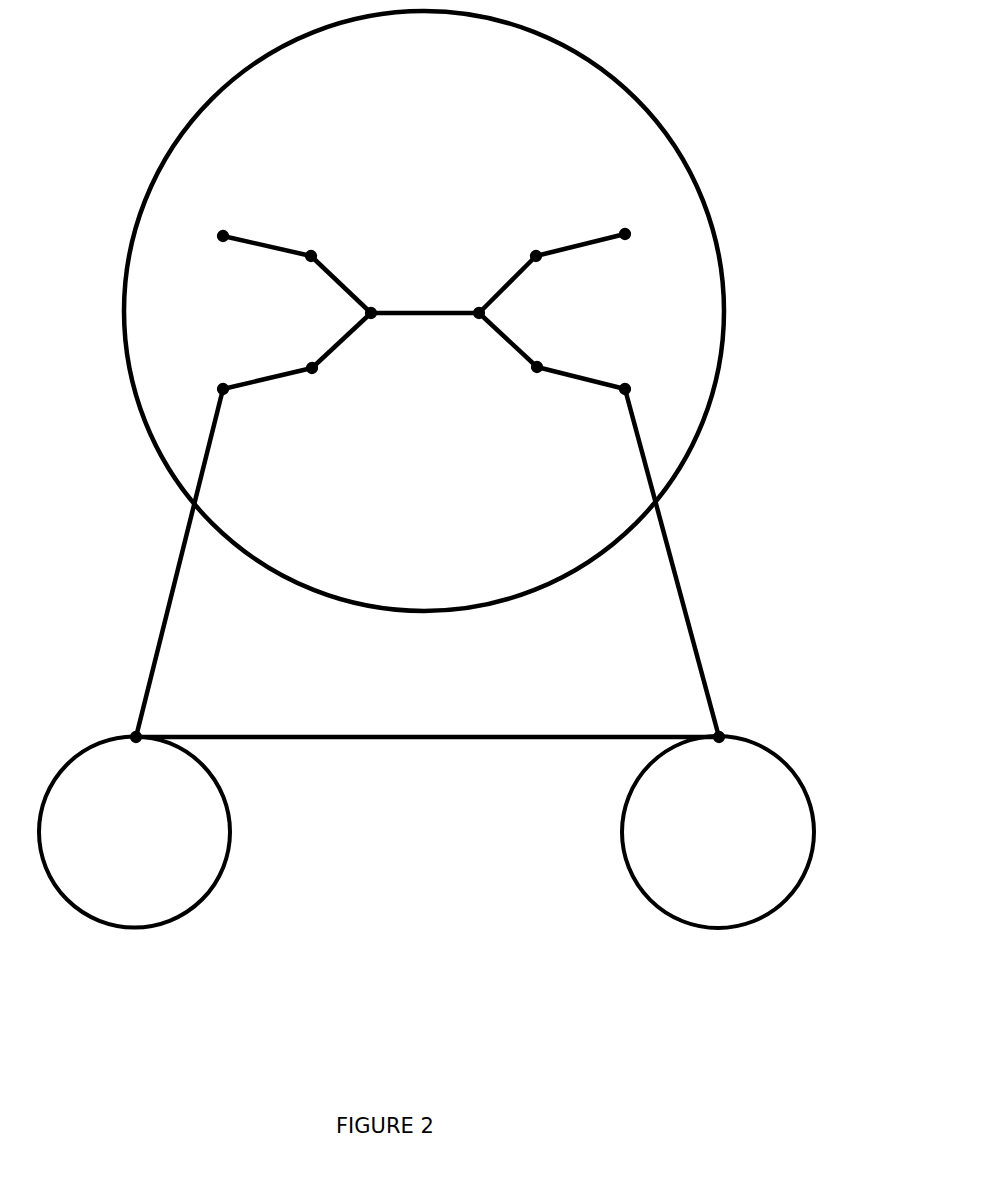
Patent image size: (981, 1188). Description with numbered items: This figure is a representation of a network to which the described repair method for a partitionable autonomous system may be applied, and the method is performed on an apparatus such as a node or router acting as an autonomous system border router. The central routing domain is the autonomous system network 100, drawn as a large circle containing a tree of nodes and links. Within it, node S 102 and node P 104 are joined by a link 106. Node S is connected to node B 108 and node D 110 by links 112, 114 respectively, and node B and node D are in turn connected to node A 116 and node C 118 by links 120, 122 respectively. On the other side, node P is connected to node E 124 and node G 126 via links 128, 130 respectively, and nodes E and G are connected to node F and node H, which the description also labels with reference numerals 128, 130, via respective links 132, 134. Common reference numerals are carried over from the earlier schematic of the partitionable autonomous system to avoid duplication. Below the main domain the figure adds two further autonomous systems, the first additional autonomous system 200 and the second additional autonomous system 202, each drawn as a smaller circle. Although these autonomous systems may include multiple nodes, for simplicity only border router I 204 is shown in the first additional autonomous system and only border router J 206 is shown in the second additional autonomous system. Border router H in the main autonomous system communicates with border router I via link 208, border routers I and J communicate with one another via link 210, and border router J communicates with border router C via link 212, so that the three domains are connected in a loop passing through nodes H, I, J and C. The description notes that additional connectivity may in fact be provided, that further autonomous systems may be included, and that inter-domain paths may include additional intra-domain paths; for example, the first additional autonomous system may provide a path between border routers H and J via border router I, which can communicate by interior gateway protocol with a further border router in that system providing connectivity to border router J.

The autonomous system network 100 is at (638, 98).
The node S 102 is at (373, 317).
The node P 104 is at (480, 317).
The link 106 is at (426, 309).
The node B 108 is at (306, 263).
The node D 110 is at (305, 360).
The link 112 is at (336, 275).
The link 114 is at (337, 351).
The node A 116 is at (217, 247).
The node C 118 is at (218, 383).
The link 120 is at (267, 247).
The link 122 is at (263, 385).
The node E 124 is at (542, 260).
The node G 126 is at (542, 363).
The link / node F 128 is at (515, 271).
The link / node H 130 is at (513, 350).
The link 132 is at (580, 243).
The link 134 is at (587, 383).
The autonomous system AS1 200 is at (635, 883).
The autonomous system AS2 202 is at (215, 887).
The ASBR I 204 is at (720, 740).
The ASBR J 206 is at (132, 745).
The link 208 is at (678, 577).
The link 210 is at (432, 739).
The link 212 is at (172, 585).